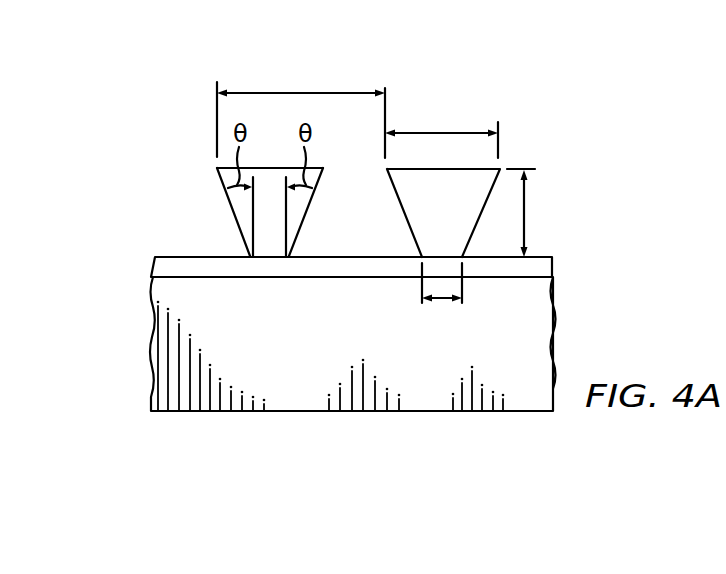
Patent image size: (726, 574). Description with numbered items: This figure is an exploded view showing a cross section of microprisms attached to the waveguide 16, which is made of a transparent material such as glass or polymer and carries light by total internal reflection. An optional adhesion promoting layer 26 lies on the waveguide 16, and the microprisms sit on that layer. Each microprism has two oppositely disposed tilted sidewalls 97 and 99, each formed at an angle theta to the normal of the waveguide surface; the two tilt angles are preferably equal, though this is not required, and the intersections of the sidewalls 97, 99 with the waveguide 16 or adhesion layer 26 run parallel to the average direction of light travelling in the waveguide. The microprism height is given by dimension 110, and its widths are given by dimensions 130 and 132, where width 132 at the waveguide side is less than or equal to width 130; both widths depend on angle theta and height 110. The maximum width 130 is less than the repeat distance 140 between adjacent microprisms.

The waveguide 16 is at (550, 327).
The adhesion promoting layer 26 is at (553, 268).
The tilted sidewall 97 is at (232, 208).
The tilted sidewall 99 is at (301, 222).
The height of microprism 110 is at (526, 212).
The width dimension 130 is at (442, 132).
The width dimension 132 is at (442, 298).
The repeat distance 140 is at (300, 93).